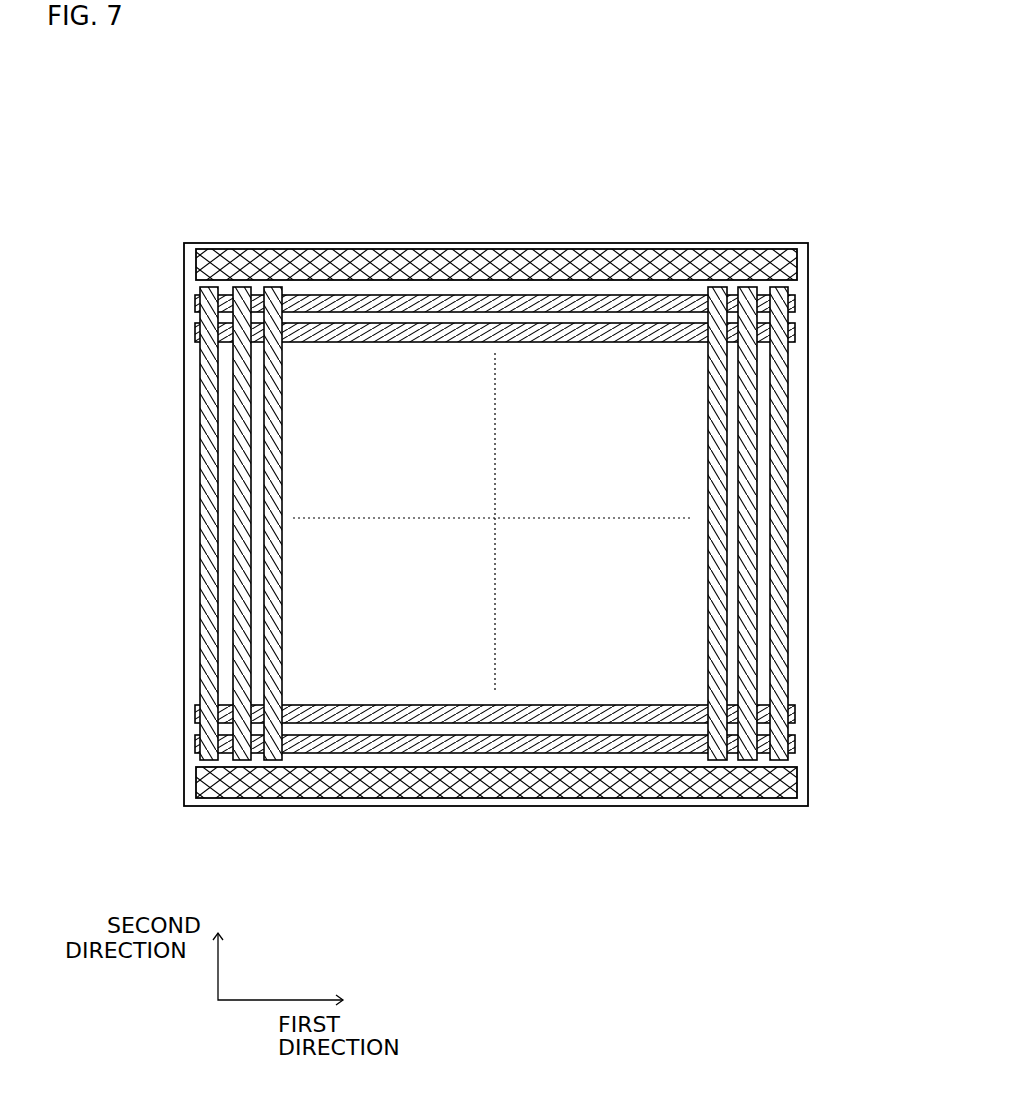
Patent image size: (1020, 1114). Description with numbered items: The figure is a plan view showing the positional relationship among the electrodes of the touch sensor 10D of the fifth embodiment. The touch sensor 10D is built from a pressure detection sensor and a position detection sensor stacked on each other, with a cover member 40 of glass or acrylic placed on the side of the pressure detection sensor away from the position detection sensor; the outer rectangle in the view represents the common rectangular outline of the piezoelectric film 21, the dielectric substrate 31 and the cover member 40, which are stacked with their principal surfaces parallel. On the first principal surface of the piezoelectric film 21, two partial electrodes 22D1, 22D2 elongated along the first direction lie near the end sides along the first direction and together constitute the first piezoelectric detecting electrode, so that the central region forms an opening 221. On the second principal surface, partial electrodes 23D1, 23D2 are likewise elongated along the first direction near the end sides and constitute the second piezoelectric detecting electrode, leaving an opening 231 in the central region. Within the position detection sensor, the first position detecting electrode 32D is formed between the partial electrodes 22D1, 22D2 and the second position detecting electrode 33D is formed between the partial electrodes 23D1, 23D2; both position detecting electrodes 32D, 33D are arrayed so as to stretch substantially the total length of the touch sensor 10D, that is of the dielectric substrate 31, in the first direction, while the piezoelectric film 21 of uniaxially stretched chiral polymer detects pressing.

The touch sensor 10D is at (797, 156).
The piezoelectric film 21 is at (496, 501).
The dielectric substrate 31 is at (496, 501).
The cover member 40 is at (585, 235).
The partial electrode 22D1 is at (496, 224).
The partial electrode 23D1 is at (342, 248).
The partial electrode 22D2 is at (496, 809).
The partial electrode 23D2 is at (372, 790).
The opening 221 is at (493, 446).
The opening 231 is at (441, 272).
The first position detecting electrode 32D is at (209, 287).
The second position detecting electrode 33D is at (534, 524).